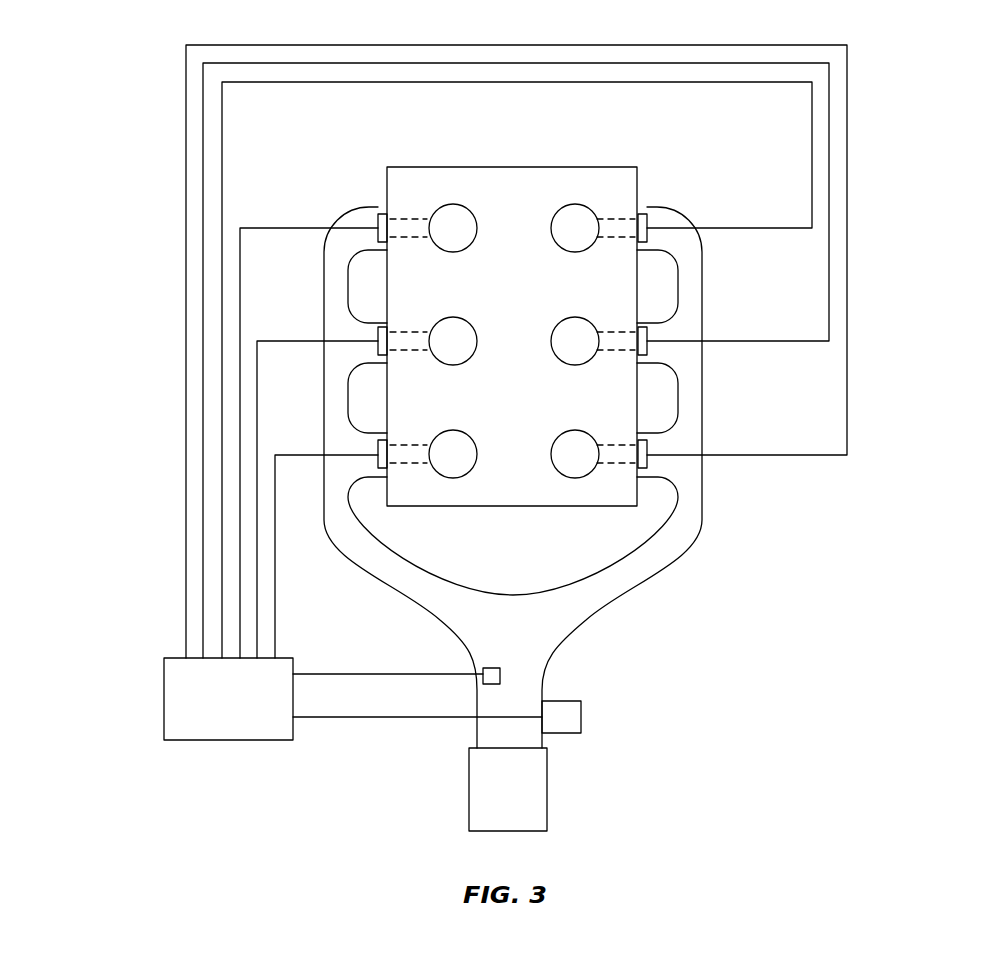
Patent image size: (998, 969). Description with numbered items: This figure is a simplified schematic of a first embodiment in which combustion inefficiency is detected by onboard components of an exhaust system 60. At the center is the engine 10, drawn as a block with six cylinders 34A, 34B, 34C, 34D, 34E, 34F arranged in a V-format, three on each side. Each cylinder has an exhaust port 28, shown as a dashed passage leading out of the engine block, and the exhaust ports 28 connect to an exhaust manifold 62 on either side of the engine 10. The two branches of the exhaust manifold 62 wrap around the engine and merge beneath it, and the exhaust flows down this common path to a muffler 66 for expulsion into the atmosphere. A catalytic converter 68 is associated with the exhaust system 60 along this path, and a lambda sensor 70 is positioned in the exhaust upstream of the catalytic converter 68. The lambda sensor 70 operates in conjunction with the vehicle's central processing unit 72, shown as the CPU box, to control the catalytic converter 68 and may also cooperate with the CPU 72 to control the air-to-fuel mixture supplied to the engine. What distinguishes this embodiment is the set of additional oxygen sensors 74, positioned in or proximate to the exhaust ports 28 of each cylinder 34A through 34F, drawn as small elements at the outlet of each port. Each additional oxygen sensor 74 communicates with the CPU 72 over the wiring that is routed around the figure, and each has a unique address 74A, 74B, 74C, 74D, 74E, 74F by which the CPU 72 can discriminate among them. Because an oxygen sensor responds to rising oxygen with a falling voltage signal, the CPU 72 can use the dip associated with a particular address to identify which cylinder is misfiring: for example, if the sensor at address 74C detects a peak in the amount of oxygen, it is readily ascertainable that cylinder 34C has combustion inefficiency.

The engine 10 is at (532, 156).
The exhaust ports 28 is at (403, 221).
The cylinder 34A is at (470, 208).
The cylinder 34B is at (470, 321).
The cylinder 34C is at (470, 434).
The cylinder 34D is at (560, 250).
The cylinder 34E is at (560, 363).
The cylinder 34F is at (560, 476).
The exhaust system 60 is at (914, 89).
The exhaust manifold 62 is at (690, 325).
The muffler 66 is at (530, 790).
The catalytic converter 68 is at (581, 715).
The lambda sensor 70 is at (483, 672).
The central processing unit 72 is at (212, 724).
The additional oxygen sensors 74 is at (310, 206).
The unique address 74A is at (379, 216).
The unique address 74B is at (378, 333).
The unique address 74C is at (378, 447).
The unique address 74D is at (648, 214).
The unique address 74E is at (650, 347).
The unique address 74F is at (650, 462).